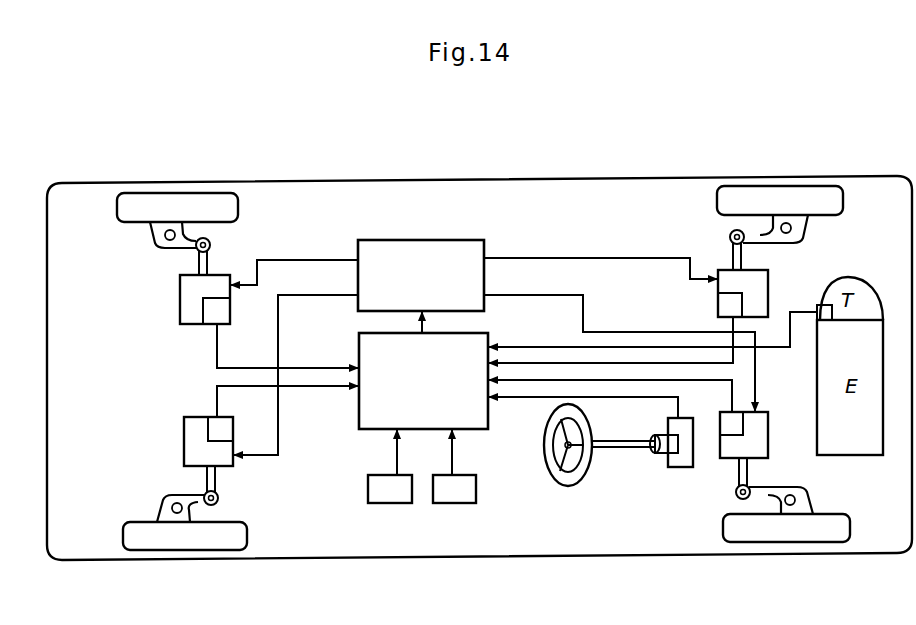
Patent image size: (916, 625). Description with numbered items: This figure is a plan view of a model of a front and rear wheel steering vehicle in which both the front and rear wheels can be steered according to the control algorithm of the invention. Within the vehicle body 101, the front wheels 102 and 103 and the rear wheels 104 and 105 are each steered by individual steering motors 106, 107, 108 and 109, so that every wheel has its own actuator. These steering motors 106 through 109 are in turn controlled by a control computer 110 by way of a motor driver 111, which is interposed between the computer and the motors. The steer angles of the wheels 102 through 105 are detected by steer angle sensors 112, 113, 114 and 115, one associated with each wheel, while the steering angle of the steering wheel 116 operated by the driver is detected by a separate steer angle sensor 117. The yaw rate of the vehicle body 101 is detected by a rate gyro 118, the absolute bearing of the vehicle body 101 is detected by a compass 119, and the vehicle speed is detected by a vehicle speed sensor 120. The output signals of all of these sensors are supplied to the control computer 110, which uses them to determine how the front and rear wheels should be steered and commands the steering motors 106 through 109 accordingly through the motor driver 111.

The vehicle body 101 is at (520, 183).
The front wheel 102 is at (760, 193).
The front wheel 103 is at (788, 537).
The rear wheel 104 is at (193, 197).
The rear wheel 105 is at (188, 542).
The steering motor 106 is at (760, 285).
The steering motor 107 is at (765, 442).
The steering motor 108 is at (187, 303).
The steering motor 109 is at (192, 452).
The control computer 110 is at (365, 415).
The motor driver 111 is at (432, 248).
The steer angle sensor 112 is at (718, 303).
The steer angle sensor 113 is at (723, 427).
The steer angle sensor 114 is at (210, 328).
The steer angle sensor 115 is at (213, 427).
The steering wheel 116 is at (548, 445).
The steer angle sensor 117 is at (667, 463).
The rate gyro 118 is at (393, 497).
The compass 119 is at (460, 497).
The vehicle speed sensor 120 is at (817, 315).